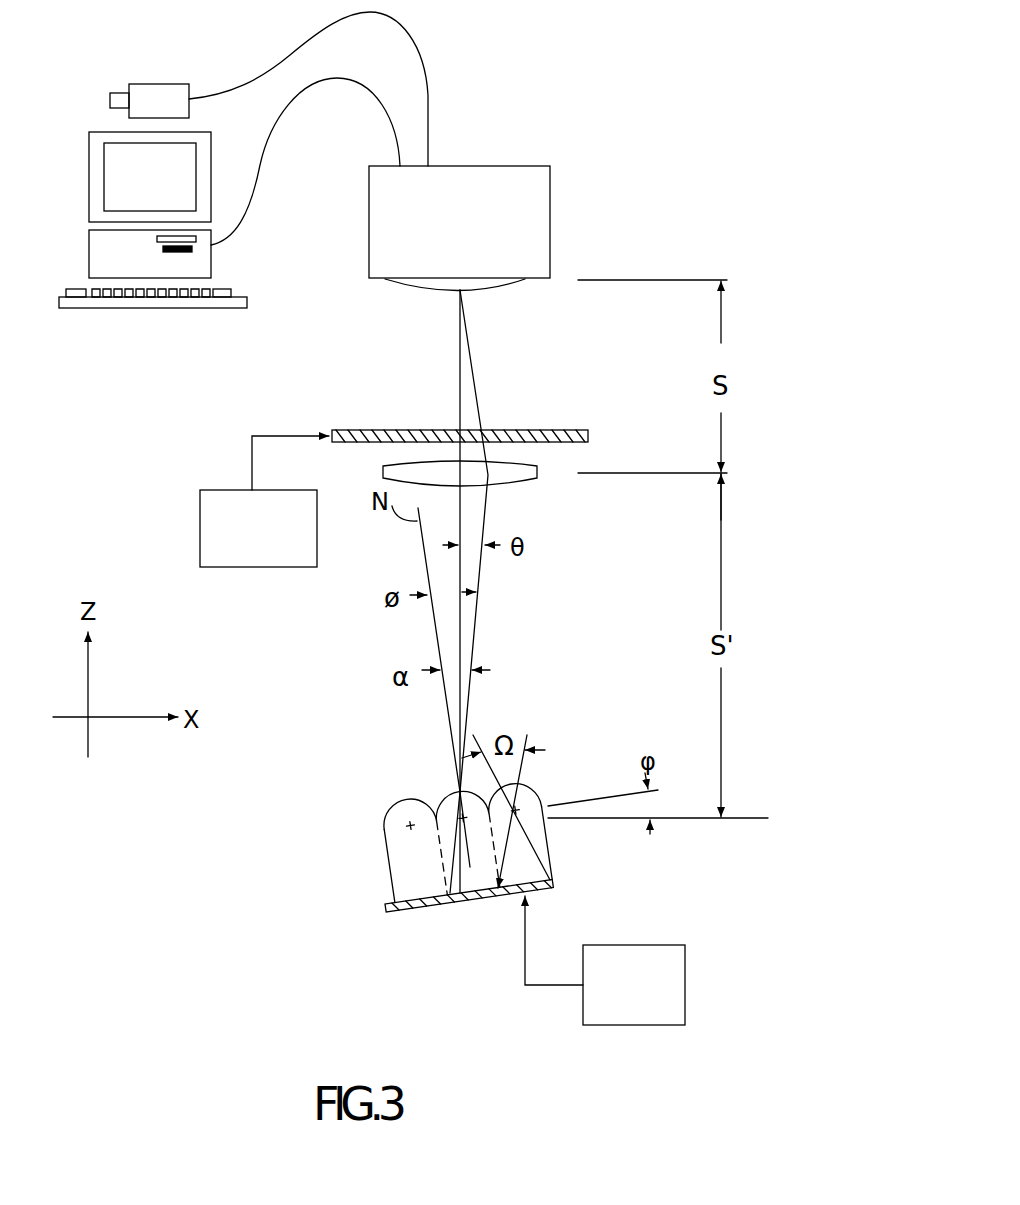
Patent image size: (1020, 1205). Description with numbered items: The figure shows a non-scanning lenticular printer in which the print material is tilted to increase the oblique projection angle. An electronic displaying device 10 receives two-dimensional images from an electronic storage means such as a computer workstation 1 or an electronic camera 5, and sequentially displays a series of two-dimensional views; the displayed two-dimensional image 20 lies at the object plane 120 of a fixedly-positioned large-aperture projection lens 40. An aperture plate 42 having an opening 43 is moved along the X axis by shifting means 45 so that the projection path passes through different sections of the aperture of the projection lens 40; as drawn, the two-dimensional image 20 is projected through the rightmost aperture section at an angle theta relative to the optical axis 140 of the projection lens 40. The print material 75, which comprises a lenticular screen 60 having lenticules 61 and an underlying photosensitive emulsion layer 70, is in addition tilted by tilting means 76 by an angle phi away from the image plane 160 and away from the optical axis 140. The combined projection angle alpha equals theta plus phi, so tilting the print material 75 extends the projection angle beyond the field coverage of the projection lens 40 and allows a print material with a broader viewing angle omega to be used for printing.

The computer workstation 1 is at (78, 191).
The electronic camera 5 is at (139, 92).
The electronic displaying device 10 is at (483, 170).
The 2D image 20 is at (413, 284).
The object plane 120 is at (607, 280).
The optical axis 140 is at (458, 387).
The opening 43 is at (493, 428).
The aperture plate 42 is at (558, 428).
The shifting means 45 is at (218, 562).
The projection lens 40 is at (520, 482).
The image plane 160 is at (742, 818).
The print material 75 is at (324, 860).
The lenticular screen 60 is at (389, 862).
The lenticules 61 is at (395, 812).
The photosensitive emulsion layer 70 is at (387, 910).
The tilting means 76 is at (686, 1001).